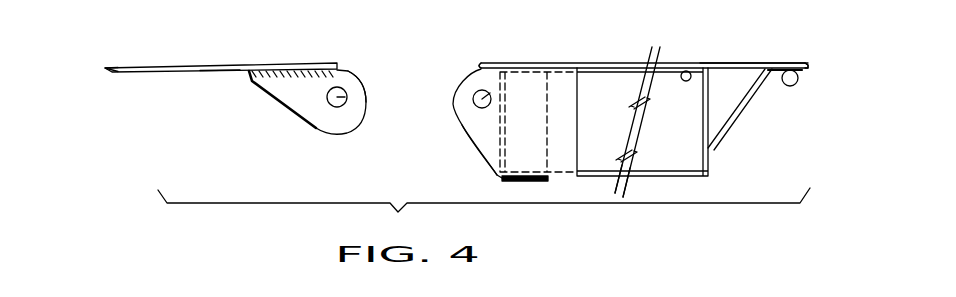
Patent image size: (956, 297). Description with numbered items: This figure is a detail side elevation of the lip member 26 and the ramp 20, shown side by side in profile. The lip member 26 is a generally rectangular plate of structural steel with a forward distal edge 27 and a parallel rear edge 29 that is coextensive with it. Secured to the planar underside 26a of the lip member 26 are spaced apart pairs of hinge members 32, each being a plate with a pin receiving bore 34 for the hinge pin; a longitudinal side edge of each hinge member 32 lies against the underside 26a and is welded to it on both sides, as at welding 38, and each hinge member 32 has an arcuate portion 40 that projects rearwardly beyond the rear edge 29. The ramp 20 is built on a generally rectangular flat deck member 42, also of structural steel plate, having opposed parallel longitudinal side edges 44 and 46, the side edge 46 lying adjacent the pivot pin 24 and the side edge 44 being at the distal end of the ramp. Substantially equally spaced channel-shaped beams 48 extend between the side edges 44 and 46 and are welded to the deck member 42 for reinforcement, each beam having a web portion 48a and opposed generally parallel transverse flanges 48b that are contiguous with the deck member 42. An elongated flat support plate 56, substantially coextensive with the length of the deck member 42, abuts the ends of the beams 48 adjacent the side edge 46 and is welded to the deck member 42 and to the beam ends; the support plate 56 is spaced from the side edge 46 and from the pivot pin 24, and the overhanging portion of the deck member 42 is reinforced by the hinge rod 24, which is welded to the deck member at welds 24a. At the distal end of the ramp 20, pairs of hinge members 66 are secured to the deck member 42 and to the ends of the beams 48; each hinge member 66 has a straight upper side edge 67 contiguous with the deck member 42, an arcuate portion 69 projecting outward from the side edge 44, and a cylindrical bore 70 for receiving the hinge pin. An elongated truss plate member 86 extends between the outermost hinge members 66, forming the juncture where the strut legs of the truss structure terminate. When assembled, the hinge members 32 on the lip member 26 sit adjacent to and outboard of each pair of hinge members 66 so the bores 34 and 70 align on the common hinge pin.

The ramp 20 is at (772, 64).
The pivot pin 24 is at (797, 85).
The welds 24a is at (837, 133).
The lip member 26 is at (244, 64).
The planar underside 26a is at (223, 73).
The forward distal edge 27 is at (111, 73).
The rear edge 29 is at (338, 68).
The hinge member 32 is at (313, 126).
The pin receiving bore 34 is at (341, 97).
The welding 38 is at (280, 74).
The arcuate portion 40 is at (361, 114).
The deck member 42 is at (592, 63).
The side edge 44 is at (474, 63).
The side edge 46 is at (810, 66).
The beams 48 is at (627, 59).
The web portion 48a is at (605, 144).
The transverse flanges 48b is at (688, 71).
The support plate 56 is at (712, 98).
The hinge member 66 is at (486, 132).
The upper side edge 67 is at (537, 70).
The arcuate portion 69 is at (451, 106).
The cylindrical bore 70 is at (474, 95).
The truss plate member 86 is at (503, 189).